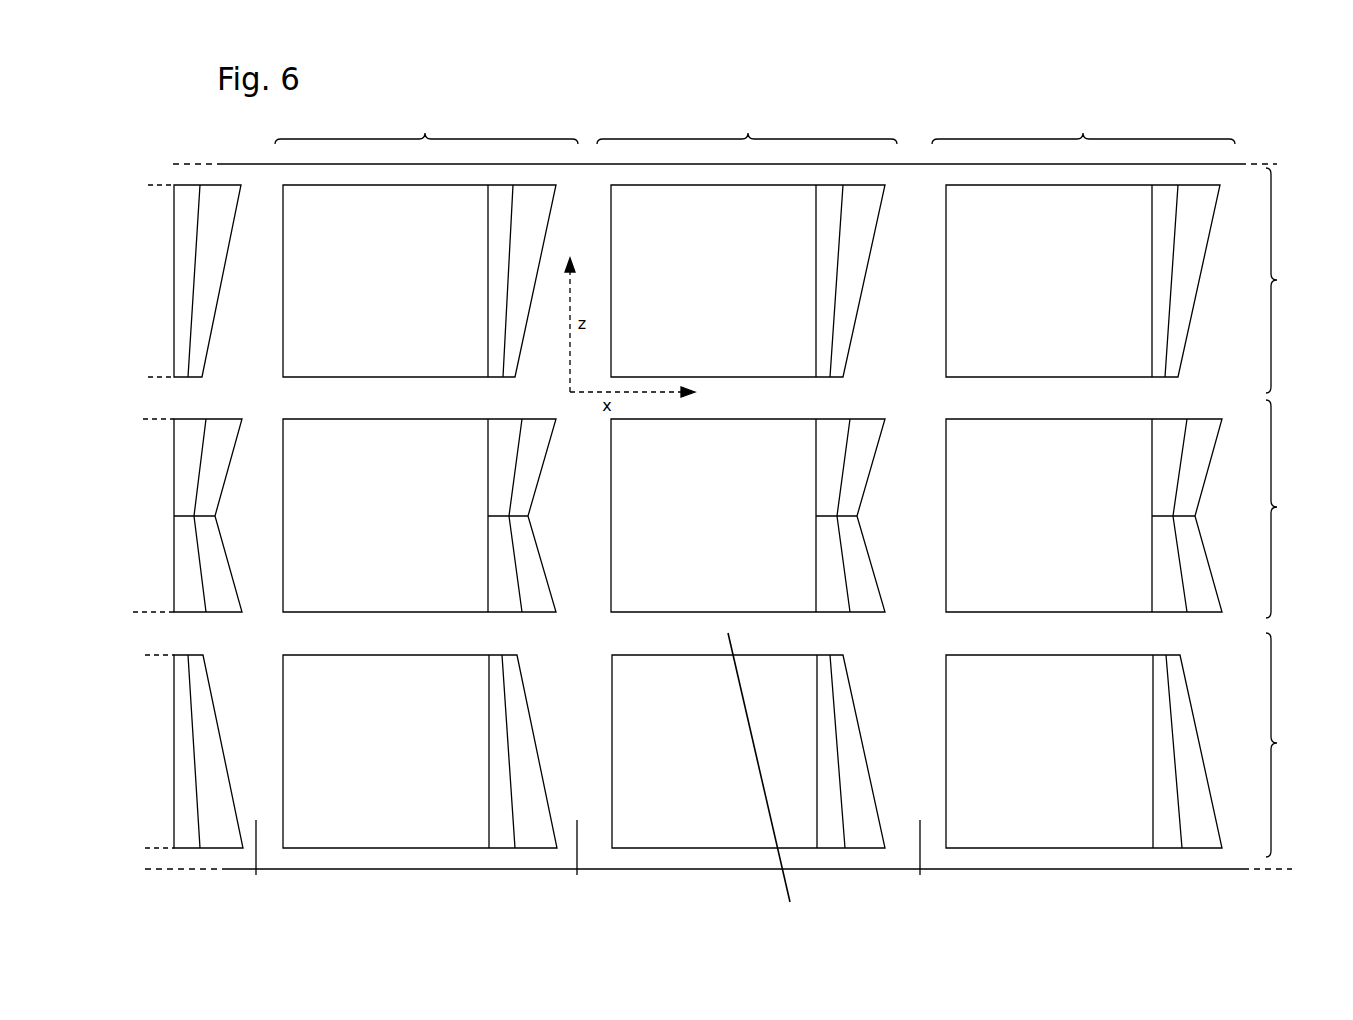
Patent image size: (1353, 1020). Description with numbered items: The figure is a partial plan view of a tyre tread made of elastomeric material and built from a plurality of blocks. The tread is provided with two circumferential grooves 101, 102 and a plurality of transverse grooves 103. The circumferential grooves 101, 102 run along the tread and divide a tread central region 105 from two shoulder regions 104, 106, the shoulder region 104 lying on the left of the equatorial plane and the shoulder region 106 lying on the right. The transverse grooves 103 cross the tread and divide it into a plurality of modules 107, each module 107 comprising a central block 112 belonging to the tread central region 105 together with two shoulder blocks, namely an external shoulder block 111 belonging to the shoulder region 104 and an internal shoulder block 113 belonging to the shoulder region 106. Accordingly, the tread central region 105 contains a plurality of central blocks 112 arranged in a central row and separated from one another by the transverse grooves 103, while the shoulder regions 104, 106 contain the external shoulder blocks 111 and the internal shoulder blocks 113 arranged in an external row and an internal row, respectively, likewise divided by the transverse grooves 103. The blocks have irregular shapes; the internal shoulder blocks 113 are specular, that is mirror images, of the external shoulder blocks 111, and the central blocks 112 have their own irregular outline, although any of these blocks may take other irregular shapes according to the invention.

The circumferential groove 101 is at (215, 632).
The circumferential groove 102 is at (200, 398).
The transverse grooves 103 is at (590, 862).
The shoulder region 104 is at (1297, 745).
The tread central region 105 is at (1297, 509).
The shoulder region 106 is at (1297, 280).
The module 107 is at (755, 126).
The external shoulder block 111 is at (698, 751).
The central block 112 is at (698, 515).
The internal shoulder block 113 is at (697, 281).